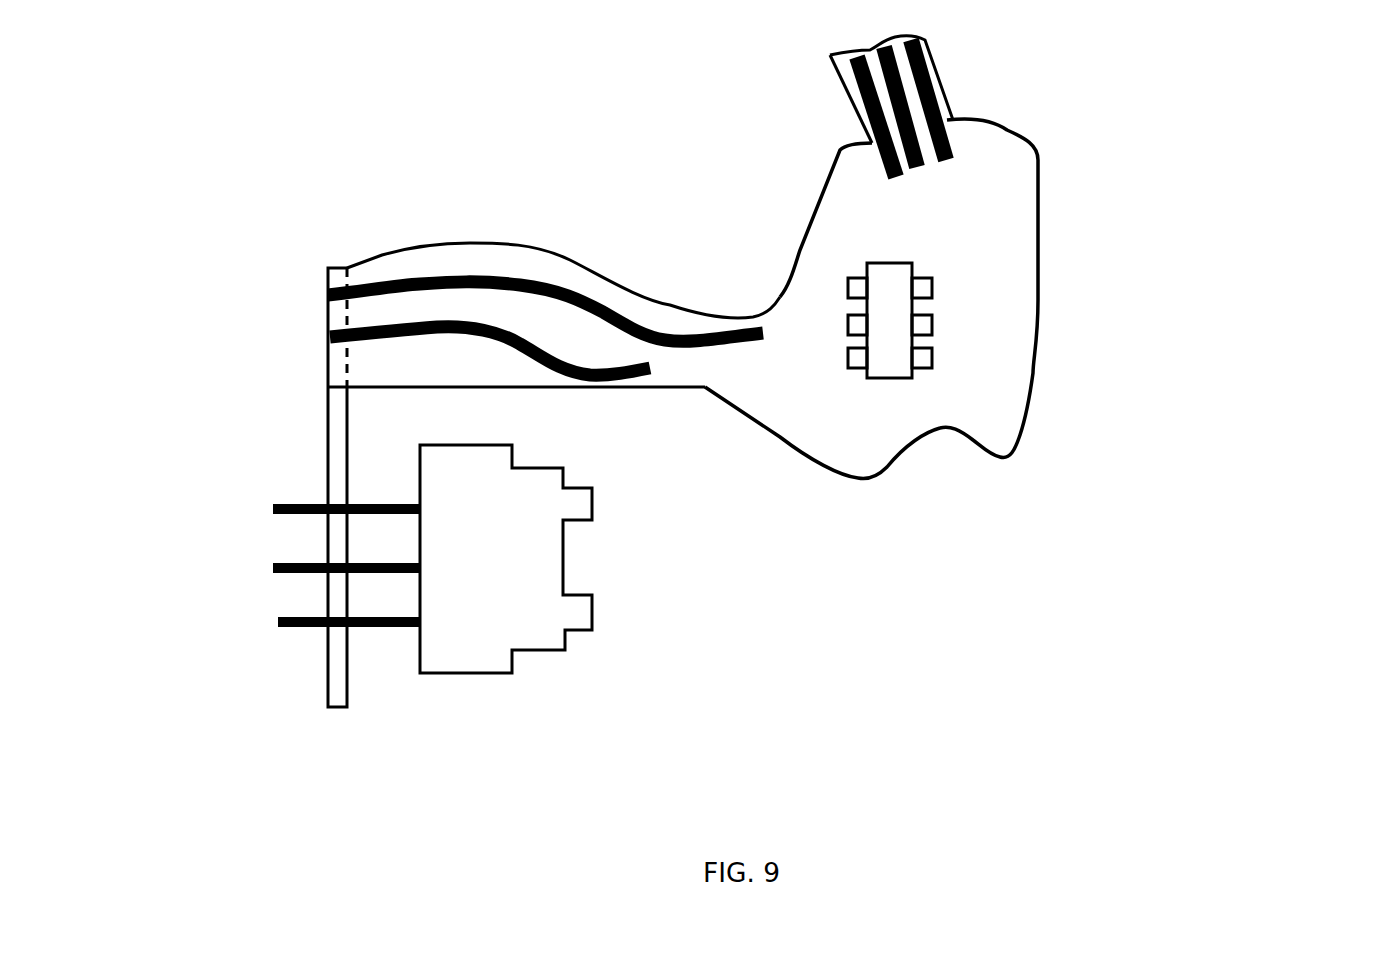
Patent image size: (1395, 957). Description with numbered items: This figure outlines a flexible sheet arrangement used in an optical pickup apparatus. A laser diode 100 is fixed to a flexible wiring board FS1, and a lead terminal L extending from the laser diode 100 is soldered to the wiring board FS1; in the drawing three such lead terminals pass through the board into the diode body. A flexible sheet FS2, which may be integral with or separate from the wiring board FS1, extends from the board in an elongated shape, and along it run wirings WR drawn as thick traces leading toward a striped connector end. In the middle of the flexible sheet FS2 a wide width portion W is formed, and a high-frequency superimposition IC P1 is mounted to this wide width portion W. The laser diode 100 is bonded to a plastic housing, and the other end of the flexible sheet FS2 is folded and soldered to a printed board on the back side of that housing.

The flexible sheet FS2 is at (503, 243).
The wide width portion W is at (1033, 373).
The wiring WR is at (887, 170).
The superimposition IC P1 is at (905, 303).
The wiring board FS1 is at (342, 707).
The lead terminal L is at (310, 515).
The laser diode 100 is at (507, 608).